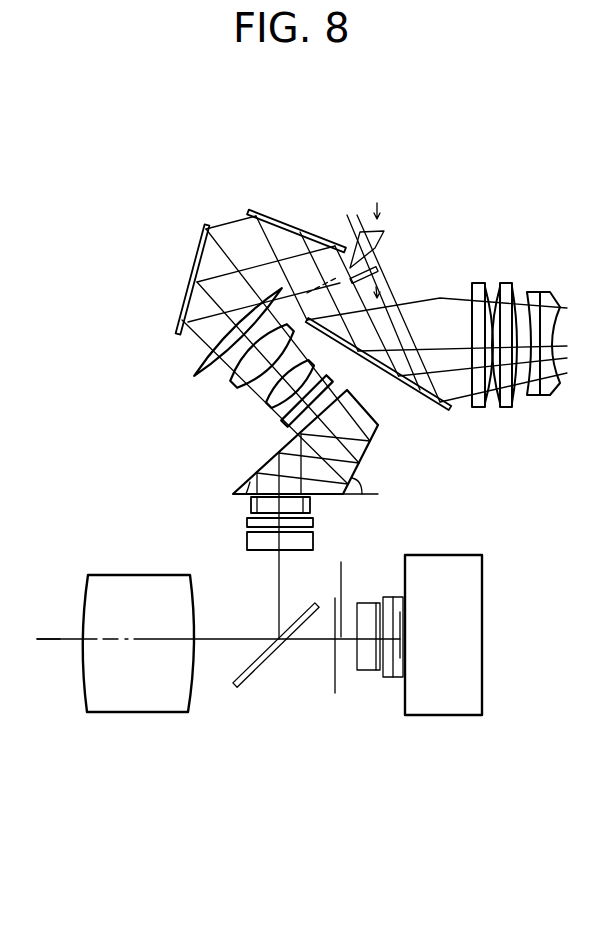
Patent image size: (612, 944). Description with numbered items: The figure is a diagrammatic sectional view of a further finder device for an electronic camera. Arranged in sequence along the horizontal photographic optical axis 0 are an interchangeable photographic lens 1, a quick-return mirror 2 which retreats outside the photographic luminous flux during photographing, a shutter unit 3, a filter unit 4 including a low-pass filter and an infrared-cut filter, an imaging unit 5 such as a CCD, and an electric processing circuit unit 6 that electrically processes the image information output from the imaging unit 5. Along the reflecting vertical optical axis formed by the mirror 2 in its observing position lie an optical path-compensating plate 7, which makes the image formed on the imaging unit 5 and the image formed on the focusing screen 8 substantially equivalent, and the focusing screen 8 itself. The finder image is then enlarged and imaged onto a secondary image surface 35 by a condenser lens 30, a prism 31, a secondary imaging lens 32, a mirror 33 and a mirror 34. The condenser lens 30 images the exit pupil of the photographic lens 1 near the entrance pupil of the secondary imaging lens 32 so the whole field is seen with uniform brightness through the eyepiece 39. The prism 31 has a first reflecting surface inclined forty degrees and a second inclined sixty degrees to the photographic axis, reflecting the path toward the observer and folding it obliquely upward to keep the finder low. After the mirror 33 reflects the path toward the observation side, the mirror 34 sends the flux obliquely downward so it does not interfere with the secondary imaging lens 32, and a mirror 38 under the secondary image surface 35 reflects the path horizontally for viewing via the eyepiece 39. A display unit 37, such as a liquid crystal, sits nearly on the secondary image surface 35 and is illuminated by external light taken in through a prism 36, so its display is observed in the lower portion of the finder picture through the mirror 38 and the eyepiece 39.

The photographic optical axis 0 is at (46, 640).
The interchangeable photographic lens 1 is at (143, 698).
The quick-return mirror 2 is at (235, 688).
The shutter unit 3 is at (335, 682).
The filter unit 4 is at (372, 672).
The imaging unit 5 is at (400, 678).
The electric processing circuit unit 6 is at (473, 657).
The optical path-compensating plate 7 is at (247, 541).
The focusing screen 8 is at (247, 523).
The condenser lens 30 is at (252, 508).
The prism 31 is at (360, 452).
The secondary imaging lens 32 is at (264, 451).
The mirror 33 is at (180, 318).
The mirror 34 is at (277, 213).
The secondary image surface 35 is at (338, 276).
The prism 36 is at (372, 240).
The display unit 37 is at (375, 276).
The mirror 38 is at (438, 408).
The eyepiece 39 is at (567, 277).